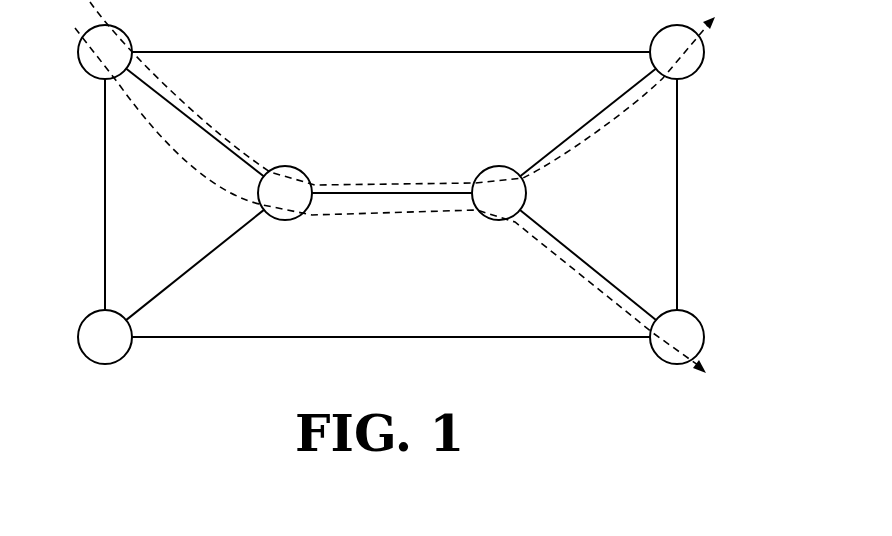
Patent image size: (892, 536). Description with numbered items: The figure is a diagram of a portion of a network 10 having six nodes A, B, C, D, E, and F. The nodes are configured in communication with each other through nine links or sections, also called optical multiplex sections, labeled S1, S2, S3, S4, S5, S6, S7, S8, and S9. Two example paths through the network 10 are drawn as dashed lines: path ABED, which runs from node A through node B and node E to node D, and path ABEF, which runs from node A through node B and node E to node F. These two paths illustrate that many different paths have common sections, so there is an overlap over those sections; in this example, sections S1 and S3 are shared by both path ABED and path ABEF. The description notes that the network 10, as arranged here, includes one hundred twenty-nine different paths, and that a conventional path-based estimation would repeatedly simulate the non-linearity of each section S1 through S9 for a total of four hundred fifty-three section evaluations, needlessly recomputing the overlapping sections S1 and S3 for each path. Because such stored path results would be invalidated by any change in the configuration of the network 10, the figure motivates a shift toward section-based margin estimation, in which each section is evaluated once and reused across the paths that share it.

The network 10 is at (406, 259).
The node A is at (105, 52).
The node B is at (285, 193).
The node C is at (105, 337).
The node D is at (677, 52).
The node E is at (499, 193).
The node F is at (677, 337).
The section S1 is at (194, 123).
The section S2 is at (195, 265).
The section S3 is at (392, 180).
The section S4 is at (588, 122).
The section S5 is at (588, 265).
The section S6 is at (391, 39).
The section S7 is at (694, 194).
The section S8 is at (391, 324).
The section S9 is at (122, 194).
The path ABED is at (625, 115).
The path ABEF is at (615, 304).